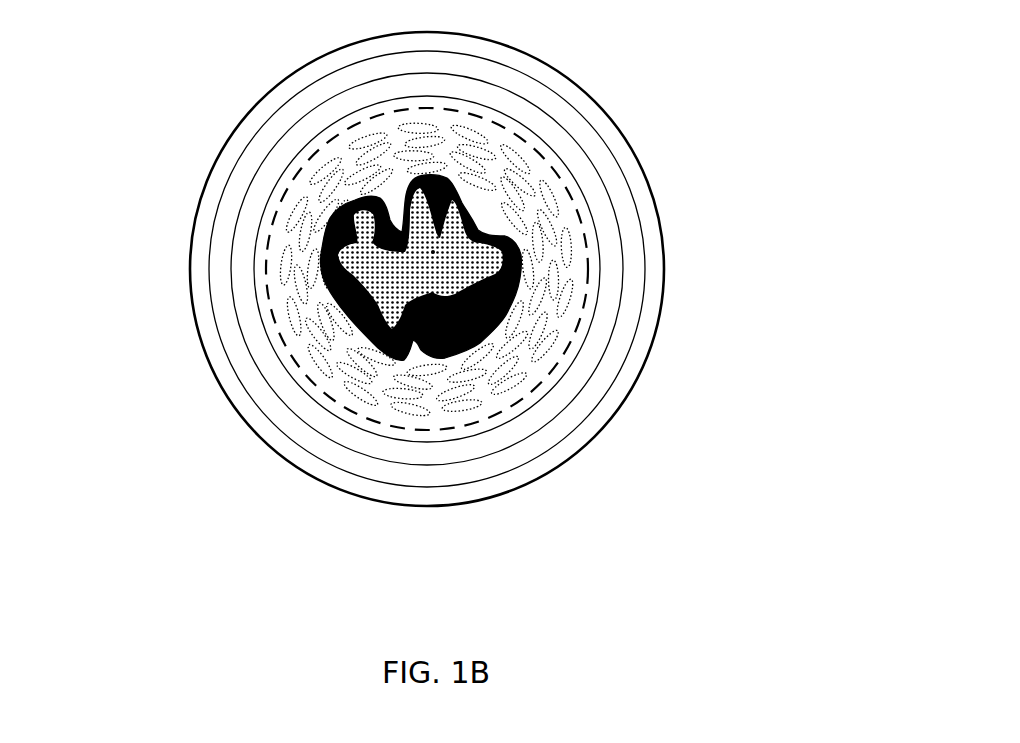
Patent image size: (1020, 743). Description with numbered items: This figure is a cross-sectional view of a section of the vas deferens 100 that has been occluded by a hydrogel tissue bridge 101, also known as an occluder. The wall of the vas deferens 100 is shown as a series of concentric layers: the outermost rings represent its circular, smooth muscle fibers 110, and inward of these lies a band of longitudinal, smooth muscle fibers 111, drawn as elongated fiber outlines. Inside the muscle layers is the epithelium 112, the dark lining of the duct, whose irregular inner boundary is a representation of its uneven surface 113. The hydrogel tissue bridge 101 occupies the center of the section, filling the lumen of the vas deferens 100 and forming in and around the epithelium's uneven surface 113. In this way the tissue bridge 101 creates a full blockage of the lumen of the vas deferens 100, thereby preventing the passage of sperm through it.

The vas deferens 100 is at (353, 269).
The hydrogel tissue bridge 101 is at (634, 186).
The circular smooth muscle fibers 110 is at (503, 460).
The longitudinal smooth muscle fibers 111 is at (527, 372).
The epithelium 112 is at (470, 313).
The uneven surface 113 is at (500, 257).